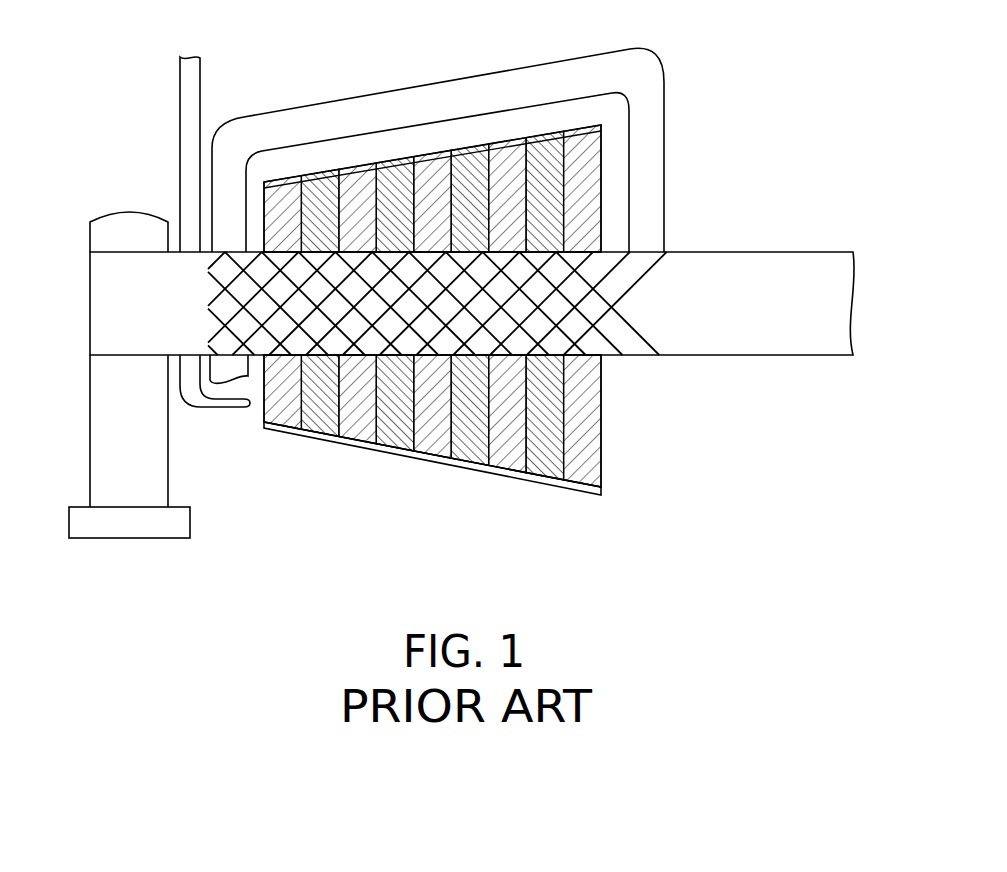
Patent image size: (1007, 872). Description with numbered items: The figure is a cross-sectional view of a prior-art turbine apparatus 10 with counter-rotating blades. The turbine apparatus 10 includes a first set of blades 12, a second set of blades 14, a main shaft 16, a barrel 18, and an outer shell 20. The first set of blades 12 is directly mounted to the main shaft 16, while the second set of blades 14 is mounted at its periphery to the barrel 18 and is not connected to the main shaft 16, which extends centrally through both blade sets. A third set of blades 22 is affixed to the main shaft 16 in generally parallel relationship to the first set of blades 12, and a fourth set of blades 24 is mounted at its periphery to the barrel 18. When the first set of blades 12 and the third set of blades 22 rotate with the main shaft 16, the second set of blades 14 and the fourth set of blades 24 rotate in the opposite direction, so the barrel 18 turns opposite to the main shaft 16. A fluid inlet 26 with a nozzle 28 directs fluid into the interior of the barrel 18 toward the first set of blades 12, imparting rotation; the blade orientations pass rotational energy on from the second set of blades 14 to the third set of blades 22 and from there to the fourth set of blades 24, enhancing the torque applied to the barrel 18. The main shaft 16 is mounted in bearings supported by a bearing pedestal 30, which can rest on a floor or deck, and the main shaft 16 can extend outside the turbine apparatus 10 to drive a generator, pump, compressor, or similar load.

The turbine apparatus 10 is at (748, 89).
The first set of blades 12 is at (287, 417).
The second set of blades 14 is at (323, 425).
The main shaft 16 is at (803, 262).
The barrel 18 is at (543, 468).
The outer shell 20 is at (525, 88).
The third set of blades 22 is at (360, 435).
The fourth set of blades 24 is at (400, 438).
The fluid inlet 26 is at (196, 84).
The nozzle 28 is at (210, 408).
The bearing pedestal 30 is at (108, 424).